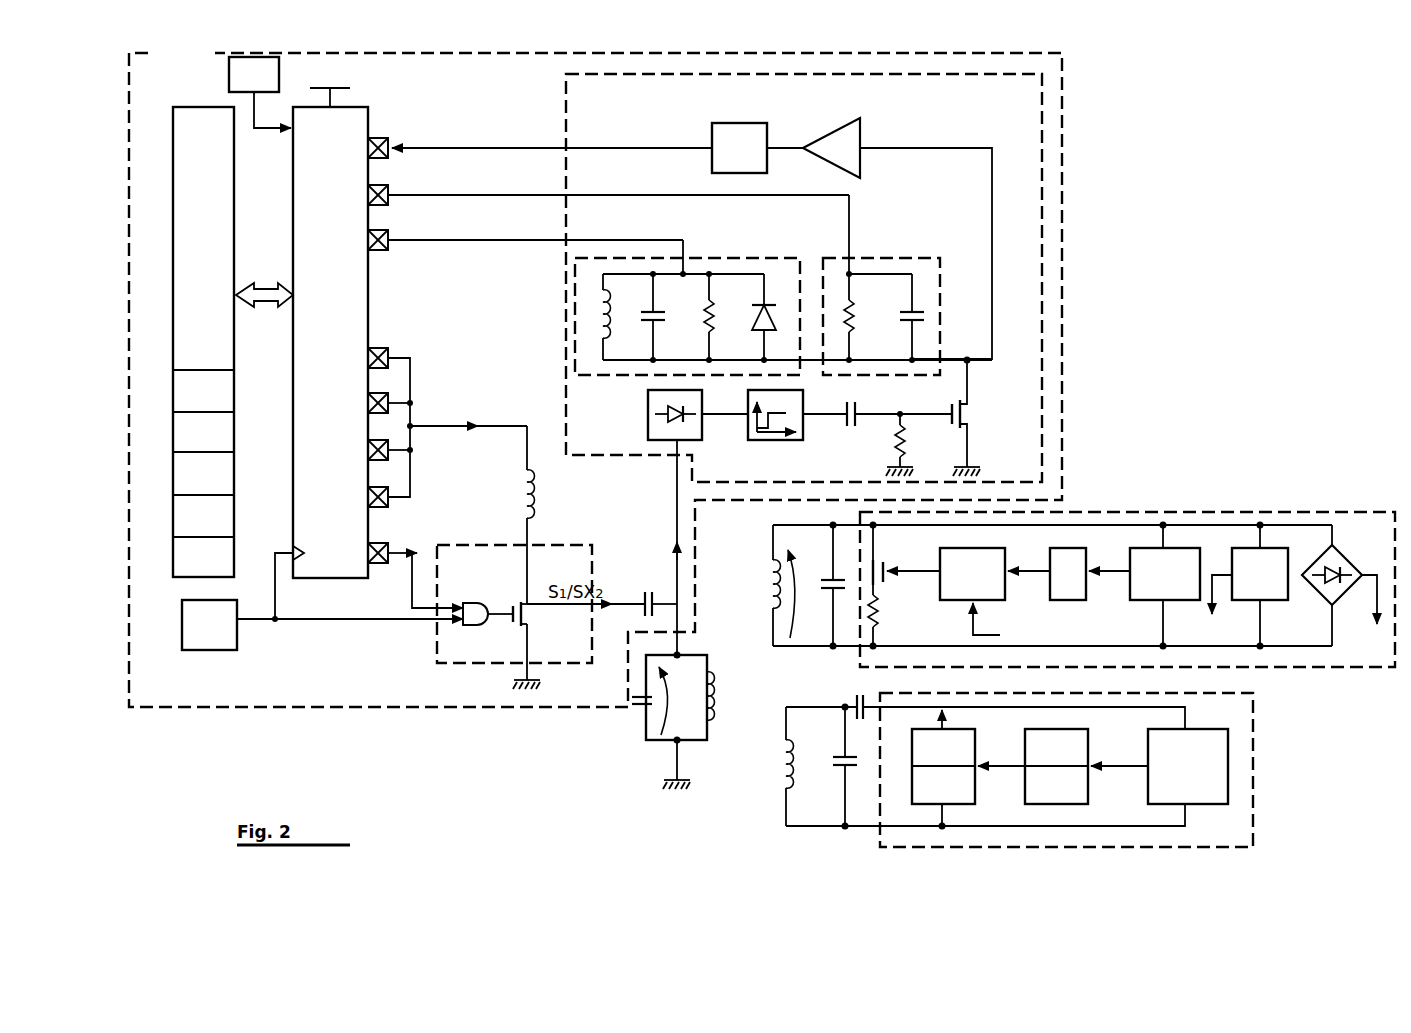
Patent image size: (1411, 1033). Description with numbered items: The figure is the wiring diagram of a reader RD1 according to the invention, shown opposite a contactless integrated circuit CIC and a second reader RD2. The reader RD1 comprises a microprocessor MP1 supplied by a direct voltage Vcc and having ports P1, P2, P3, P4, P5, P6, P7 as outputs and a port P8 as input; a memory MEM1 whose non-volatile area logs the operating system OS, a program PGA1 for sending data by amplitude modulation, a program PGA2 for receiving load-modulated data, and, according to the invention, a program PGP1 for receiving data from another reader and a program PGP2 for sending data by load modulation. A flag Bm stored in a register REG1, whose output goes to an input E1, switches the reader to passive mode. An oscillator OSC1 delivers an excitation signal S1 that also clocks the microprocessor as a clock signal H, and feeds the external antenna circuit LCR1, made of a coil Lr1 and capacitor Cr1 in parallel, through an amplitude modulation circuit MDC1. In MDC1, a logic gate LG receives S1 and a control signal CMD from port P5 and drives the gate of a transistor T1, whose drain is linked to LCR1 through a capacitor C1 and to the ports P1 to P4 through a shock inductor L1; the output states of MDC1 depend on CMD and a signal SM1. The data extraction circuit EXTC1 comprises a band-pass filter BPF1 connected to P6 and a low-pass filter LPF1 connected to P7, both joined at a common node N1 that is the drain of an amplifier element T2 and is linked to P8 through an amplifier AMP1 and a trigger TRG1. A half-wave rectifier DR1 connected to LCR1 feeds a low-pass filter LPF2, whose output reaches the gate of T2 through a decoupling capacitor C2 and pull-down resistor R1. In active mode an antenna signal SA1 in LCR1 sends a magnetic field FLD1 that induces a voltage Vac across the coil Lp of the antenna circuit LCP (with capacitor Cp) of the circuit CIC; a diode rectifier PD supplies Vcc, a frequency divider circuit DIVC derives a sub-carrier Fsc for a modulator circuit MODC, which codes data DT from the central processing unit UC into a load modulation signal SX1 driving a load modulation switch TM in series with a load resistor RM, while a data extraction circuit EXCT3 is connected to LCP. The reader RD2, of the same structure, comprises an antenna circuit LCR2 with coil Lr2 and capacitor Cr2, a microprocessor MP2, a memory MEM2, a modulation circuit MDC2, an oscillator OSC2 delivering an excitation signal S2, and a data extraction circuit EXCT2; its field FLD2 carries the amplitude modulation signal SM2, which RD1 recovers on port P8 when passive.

The register REG1 is at (229, 73).
The memory MEM1 is at (166, 329).
The program for managing a protocol to receive data sent by another reader PGP1 is at (203, 428).
The program for managing a protocol to send data by load modulation PGP2 is at (203, 386).
The program for managing a protocol to send data by amplitude modulation PGA1 is at (203, 511).
The program for managing a protocol to receive data from a contactless integrated ci PGA2 is at (203, 468).
The operating system OS is at (203, 554).
The flag Bm is at (260, 92).
The input of the microprocessor E1 is at (304, 128).
The microprocessor MP1 is at (352, 321).
The direct supply voltage Vcc is at (328, 86).
The output port P1 is at (360, 498).
The output port P2 is at (360, 451).
The output port P3 is at (360, 404).
The output port P4 is at (360, 359).
The output port P5 is at (360, 554).
The output port P6 is at (360, 241).
The output port P7 is at (360, 196).
The input port P8 is at (360, 149).
The clock signal H is at (300, 546).
The amplitude modulation signal SM2 is at (513, 138).
The load modulation signal SX1 is at (510, 160).
The control signal SM1 is at (468, 416).
The shock inductor L1 is at (520, 500).
The control signal CMD is at (425, 572).
The oscillator OSC1 is at (209, 625).
The excitation signal S1 is at (350, 587).
The amplitude modulation circuit MDC1 is at (423, 651).
The logic gate LG is at (470, 630).
The modulation transistor T1 is at (556, 630).
The capacitor C1 is at (647, 612).
The trigger TRG1 is at (738, 123).
The amplifier AMP1 is at (830, 128).
The data extraction circuit EXTC1 is at (568, 303).
The band-pass filter BPF1 is at (768, 258).
The low-pass filter LPF1 is at (918, 258).
The common node N1 is at (967, 359).
The half-wave rectifier DR1 is at (648, 422).
The low-pass filter LPF2 is at (775, 440).
The decoupling capacitor C2 is at (858, 407).
The pull-down resistor R1 is at (896, 446).
The amplifier element T2 is at (997, 420).
The contactless integrated circuit CIC is at (1326, 668).
The load modulation switch TM is at (885, 568).
The load resistor RM is at (881, 612).
The modulator circuit MODC is at (972, 574).
The data DT is at (1029, 559).
The central processing unit UC is at (1068, 574).
The data extraction circuit EXCT3 is at (1165, 585).
The frequency divider circuit DIVC is at (1260, 585).
The sub-carrier Fsc is at (1102, 609).
The diode rectifier PD is at (1344, 562).
The antenna circuit LCP is at (807, 608).
The coil Lp is at (774, 568).
The capacitor Cp is at (825, 596).
The induced voltage Vac is at (802, 593).
The magnetic field FLD1 is at (752, 597).
The magnetic field FLD2 is at (760, 702).
The external antenna circuit LCR1 is at (665, 747).
The antenna signal SA1 is at (676, 697).
The capacitor Cr1 is at (638, 709).
The coil Lr1 is at (718, 700).
The antenna circuit LCR2 is at (952, 790).
The coil Lr2 is at (782, 790).
The capacitor Cr2 is at (840, 768).
The reader RD2 is at (1106, 770).
The excitation signal S2 is at (929, 770).
The modulation circuit MDC2 is at (943, 777).
The oscillator OSC2 is at (933, 791).
The microprocessor MP2 is at (1056, 766).
The memory MEM2 is at (1047, 791).
The data extraction circuit EXCT2 is at (1188, 766).
The reader RD1 is at (338, 708).